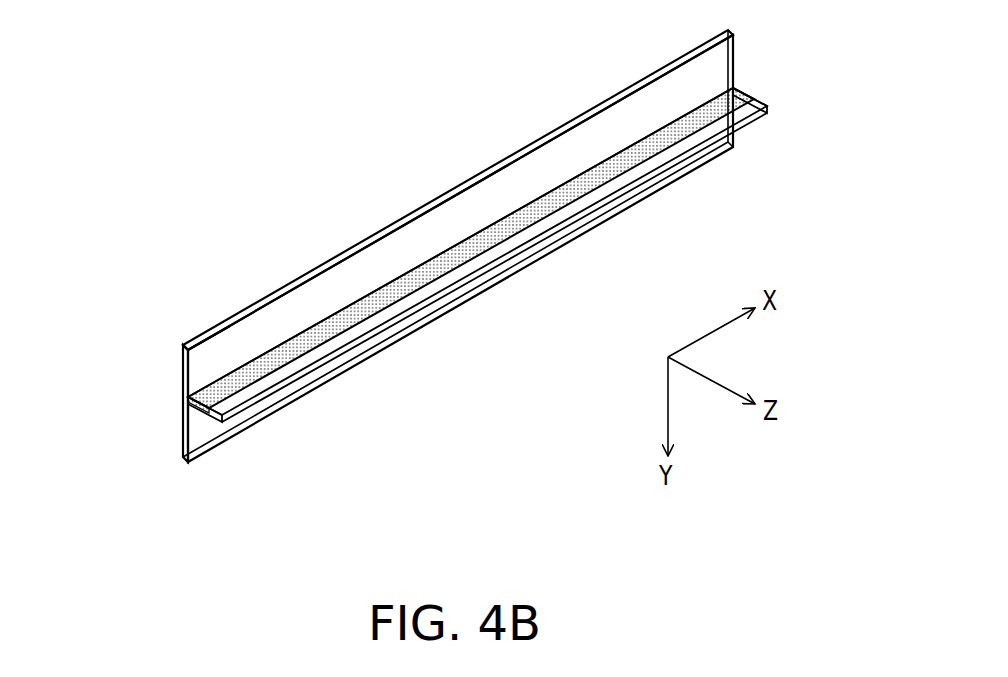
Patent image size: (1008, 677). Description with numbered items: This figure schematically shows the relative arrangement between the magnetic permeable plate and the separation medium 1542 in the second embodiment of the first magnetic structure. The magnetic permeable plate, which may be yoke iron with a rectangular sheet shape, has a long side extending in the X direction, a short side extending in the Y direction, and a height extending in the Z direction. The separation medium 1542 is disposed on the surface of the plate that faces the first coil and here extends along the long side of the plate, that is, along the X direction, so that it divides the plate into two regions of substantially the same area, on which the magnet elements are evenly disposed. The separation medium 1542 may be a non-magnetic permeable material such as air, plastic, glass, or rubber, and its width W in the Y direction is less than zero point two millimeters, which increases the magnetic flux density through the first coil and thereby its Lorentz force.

The separation medium 1542 is at (520, 256).
The width W is at (204, 440).